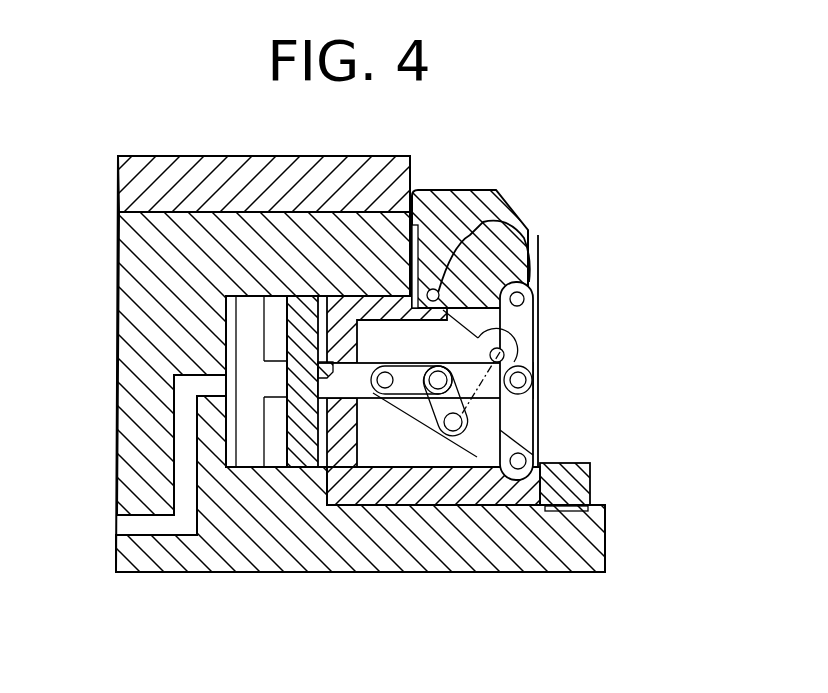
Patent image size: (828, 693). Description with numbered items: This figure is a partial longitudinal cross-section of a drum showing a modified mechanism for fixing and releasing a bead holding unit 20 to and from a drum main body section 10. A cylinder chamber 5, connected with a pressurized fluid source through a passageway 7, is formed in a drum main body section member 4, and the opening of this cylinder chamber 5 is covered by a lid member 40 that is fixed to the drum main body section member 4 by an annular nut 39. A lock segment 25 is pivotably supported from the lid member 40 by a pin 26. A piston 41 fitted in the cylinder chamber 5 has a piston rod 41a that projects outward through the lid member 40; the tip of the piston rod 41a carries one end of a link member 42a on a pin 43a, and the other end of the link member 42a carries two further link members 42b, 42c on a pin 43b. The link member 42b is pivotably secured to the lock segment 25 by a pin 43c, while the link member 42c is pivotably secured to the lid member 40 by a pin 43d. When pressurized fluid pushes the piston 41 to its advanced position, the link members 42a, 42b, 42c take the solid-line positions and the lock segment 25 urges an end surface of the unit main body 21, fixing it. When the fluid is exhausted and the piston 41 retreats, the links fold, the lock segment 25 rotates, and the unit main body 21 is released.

The drum main body section member 4 is at (400, 556).
The cylinder chamber 5 is at (272, 470).
The passageway 7 is at (163, 530).
The drum main body section 10 is at (100, 388).
The bead holding unit 20 is at (225, 156).
The unit main body 21 is at (301, 167).
The lock segment 25 is at (496, 190).
The pin 26 is at (436, 290).
The annular nut 39 is at (590, 472).
The lid member 40 is at (453, 490).
The piston 41 is at (309, 470).
The piston rod 41a is at (480, 363).
The link member 42a is at (530, 400).
The link member 42b is at (533, 348).
The link member 42c is at (530, 437).
The pin 43a is at (445, 398).
The pin 43b is at (533, 379).
The pin 43c is at (533, 295).
The pin 43d is at (530, 474).